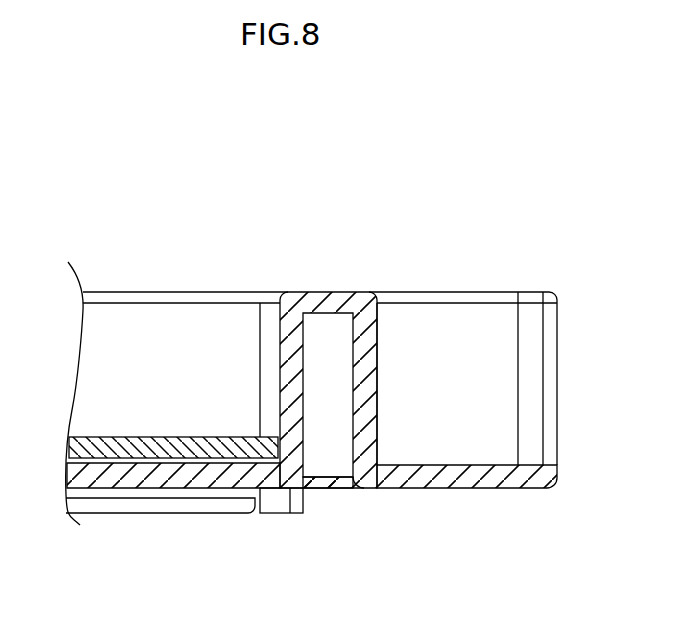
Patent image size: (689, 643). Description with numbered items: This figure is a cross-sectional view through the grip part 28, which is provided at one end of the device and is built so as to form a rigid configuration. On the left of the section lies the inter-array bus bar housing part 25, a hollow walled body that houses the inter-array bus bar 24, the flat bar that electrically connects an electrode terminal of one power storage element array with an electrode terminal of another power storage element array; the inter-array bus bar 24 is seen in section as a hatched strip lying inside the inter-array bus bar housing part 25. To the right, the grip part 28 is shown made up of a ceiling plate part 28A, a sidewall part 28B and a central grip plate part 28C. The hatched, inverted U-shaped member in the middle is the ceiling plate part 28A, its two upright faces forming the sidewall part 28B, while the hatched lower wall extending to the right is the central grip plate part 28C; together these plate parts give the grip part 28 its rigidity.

The inter-array bus bar 24 is at (131, 445).
The inter-array bus bar housing part 25 is at (188, 327).
The grip part 28 is at (482, 285).
The ceiling plate part 28A is at (321, 303).
The sidewall part 28B is at (377, 402).
The central grip plate part 28C is at (484, 470).